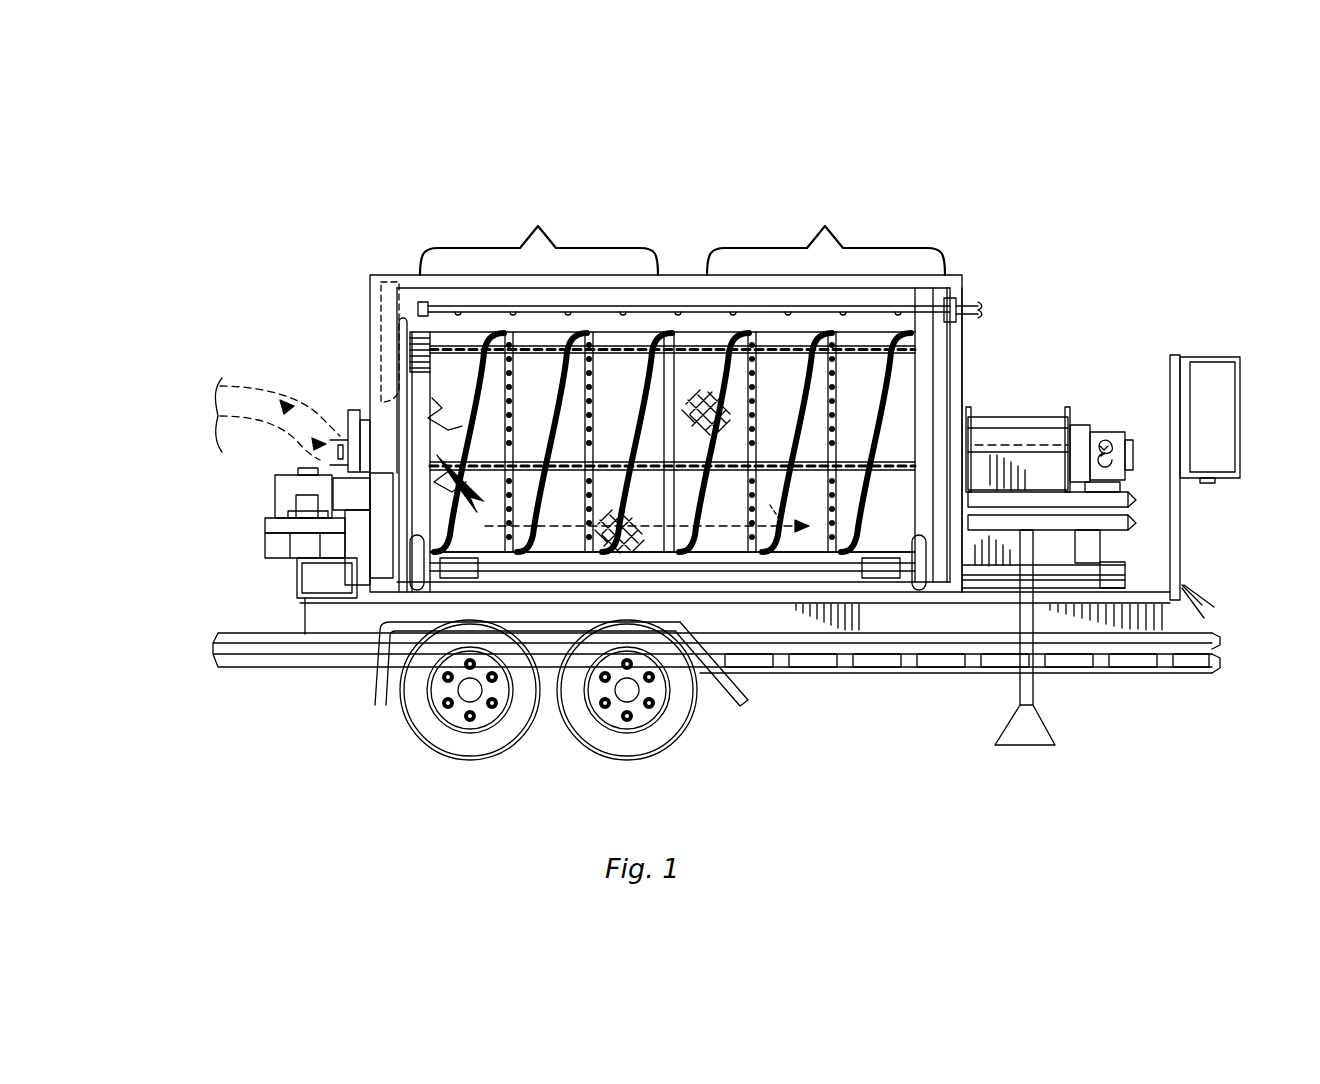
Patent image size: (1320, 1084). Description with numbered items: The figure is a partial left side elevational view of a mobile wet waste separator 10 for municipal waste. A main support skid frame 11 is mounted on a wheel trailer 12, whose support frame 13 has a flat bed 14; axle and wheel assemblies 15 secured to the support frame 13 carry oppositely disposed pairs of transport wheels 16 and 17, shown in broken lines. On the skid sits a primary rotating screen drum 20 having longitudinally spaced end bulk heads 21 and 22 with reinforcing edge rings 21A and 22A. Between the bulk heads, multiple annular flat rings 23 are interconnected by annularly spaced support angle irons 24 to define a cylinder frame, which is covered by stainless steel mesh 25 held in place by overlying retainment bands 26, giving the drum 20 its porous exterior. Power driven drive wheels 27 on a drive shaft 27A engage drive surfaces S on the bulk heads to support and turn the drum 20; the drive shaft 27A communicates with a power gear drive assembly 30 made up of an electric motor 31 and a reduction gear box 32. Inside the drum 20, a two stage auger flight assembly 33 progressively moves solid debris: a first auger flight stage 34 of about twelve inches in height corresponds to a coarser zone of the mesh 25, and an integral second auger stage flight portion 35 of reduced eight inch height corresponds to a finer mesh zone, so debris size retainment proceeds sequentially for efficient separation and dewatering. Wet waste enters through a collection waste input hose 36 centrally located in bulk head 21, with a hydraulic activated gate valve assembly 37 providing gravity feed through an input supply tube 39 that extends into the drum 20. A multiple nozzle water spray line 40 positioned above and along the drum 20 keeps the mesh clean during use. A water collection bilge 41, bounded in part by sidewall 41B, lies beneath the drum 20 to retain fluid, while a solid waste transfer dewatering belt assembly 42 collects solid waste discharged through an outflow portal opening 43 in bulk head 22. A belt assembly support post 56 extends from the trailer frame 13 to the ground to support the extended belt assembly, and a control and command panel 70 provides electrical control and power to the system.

The mobile wet waste separator 10 is at (1010, 222).
The main support skid frame 11 is at (1180, 640).
The wheel trailer 12 is at (984, 672).
The support frame 13 is at (862, 665).
The flat bed 14 is at (247, 636).
The axle and wheel assemblies 15 is at (393, 727).
The transport wheels 16 is at (498, 735).
The transport wheels 17 is at (670, 725).
The primary rotating screen drum 20 is at (672, 385).
The end bulk head 21 is at (403, 328).
The reinforcing edge ring 21A is at (417, 352).
The end bulk head 22 is at (938, 390).
The reinforcing edge ring 22A is at (940, 390).
The annular flat rings 23 is at (635, 330).
The support angle irons 24 is at (742, 395).
The stainless steel mesh 25 is at (728, 508).
The retainment bands 26 is at (520, 420).
The drive wheels 27 is at (415, 570).
The drive shaft 27A is at (560, 575).
The power gear drive assembly 30 is at (246, 516).
The electric motor 31 is at (290, 487).
The reduction gear box 32 is at (378, 532).
The two stage auger flight assembly 33 is at (875, 352).
The first auger flight stage 34 is at (539, 236).
The second auger stage flight portion 35 is at (826, 236).
The collection waste input hose 36 is at (245, 385).
The hydraulic activated gate valve assembly 37 is at (348, 408).
The input supply tube 39 is at (449, 444).
The water spray line 40 is at (452, 305).
The water collection bilge 41 is at (1146, 590).
The sidewall 41B is at (742, 610).
The solid waste transfer dewatering belt assembly 42 is at (1085, 388).
The outflow portal opening 43 is at (1010, 420).
The belt assembly support post 56 is at (1038, 692).
The control and command panel 70 is at (1210, 365).
The drive surfaces S is at (958, 300).